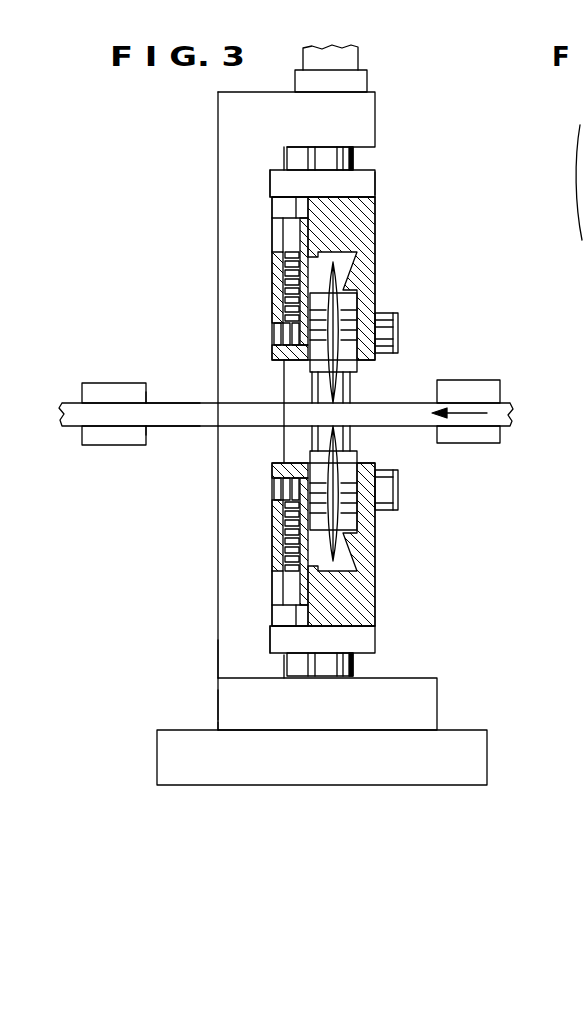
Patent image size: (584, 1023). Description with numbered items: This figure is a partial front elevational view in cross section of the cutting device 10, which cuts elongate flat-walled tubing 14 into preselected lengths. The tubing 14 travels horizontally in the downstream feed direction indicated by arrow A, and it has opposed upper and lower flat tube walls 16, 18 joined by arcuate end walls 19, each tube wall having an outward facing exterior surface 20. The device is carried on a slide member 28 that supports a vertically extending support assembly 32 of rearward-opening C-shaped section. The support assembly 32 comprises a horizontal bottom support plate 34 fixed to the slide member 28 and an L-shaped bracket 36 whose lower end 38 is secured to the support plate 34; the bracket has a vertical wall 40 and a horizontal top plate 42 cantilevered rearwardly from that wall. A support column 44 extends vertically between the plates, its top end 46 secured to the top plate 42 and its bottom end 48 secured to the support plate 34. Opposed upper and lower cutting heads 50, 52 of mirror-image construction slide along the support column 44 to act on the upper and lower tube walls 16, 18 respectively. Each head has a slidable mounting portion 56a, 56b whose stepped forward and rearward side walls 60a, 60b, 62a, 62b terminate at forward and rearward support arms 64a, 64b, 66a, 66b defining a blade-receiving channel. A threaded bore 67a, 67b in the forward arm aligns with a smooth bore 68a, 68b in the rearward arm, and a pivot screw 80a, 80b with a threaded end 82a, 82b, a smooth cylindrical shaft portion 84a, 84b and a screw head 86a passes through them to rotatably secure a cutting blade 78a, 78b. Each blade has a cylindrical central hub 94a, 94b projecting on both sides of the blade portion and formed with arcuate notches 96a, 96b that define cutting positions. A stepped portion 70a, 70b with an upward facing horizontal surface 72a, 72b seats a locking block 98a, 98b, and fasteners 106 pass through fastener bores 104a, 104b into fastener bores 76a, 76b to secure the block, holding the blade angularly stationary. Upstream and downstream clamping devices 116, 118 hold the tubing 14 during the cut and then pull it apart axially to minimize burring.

The cutting device 10 is at (97, 260).
The tubing 14 is at (510, 414).
The upper tube wall 16 is at (163, 403).
The lower tube wall 18 is at (157, 430).
The arcuate end walls 19 is at (167, 428).
The exterior surface 20 is at (152, 403).
The slide member 28 is at (382, 765).
The support assembly 32 is at (205, 697).
The bottom support plate 34 is at (227, 712).
The L-shaped bracket 36 is at (218, 651).
The lower end 38 is at (214, 680).
The vertical wall 40 is at (218, 552).
The horizontal top plate 42 is at (368, 96).
The support column 44 is at (378, 166).
The top end 46 is at (355, 156).
The bottom end 48 is at (358, 664).
The upper cutting head 50 is at (378, 180).
The lower cutting head 52 is at (383, 648).
The slidable mounting portion 56a is at (272, 175).
The slidable mounting portion 56b is at (282, 658).
The forward facing side wall 60a is at (272, 176).
The forward facing side wall 60b is at (280, 638).
The rearward facing side wall 62a is at (378, 212).
The rearward facing side wall 62b is at (380, 645).
The forward support arm 64a is at (285, 290).
The forward support arm 64b is at (285, 535).
The rearward support arm 66a is at (360, 280).
The rearward support arm 66b is at (380, 570).
The threaded bore 67a is at (274, 335).
The threaded bore 67b is at (274, 490).
The smooth bore 68a is at (362, 302).
The smooth bore 68b is at (377, 530).
The stepped portion 70a is at (378, 230).
The stepped portion 70b is at (383, 592).
The upward facing horizontal surface 72a is at (272, 262).
The horizontal surface 72b is at (272, 568).
The fastener bores 76a is at (300, 320).
The fastener bores 76b is at (300, 503).
The cutting blade 78a is at (355, 372).
The cutting blade 78b is at (352, 435).
The pivot screw 80a is at (398, 318).
The pivot screw 80b is at (398, 505).
The threaded end 82a is at (272, 352).
The threaded end 82b is at (272, 470).
The smooth cylindrical shaft portion 84a is at (383, 330).
The smooth cylindrical shaft portion 84b is at (403, 478).
The screw head 86a is at (388, 352).
The central hub 94a is at (340, 266).
The central hub 94b is at (330, 463).
The arcuate notches 96a is at (312, 360).
The arcuate notches 96b is at (320, 466).
The locking block 98a is at (378, 190).
The locking block 98b is at (382, 635).
The fastener bores 104a is at (272, 210).
The fastener bores 104b is at (272, 612).
The fasteners 106 is at (290, 207).
The upstream clamping device 116 is at (104, 392).
The downstream clamping device 118 is at (500, 387).
The feed direction A is at (470, 412).